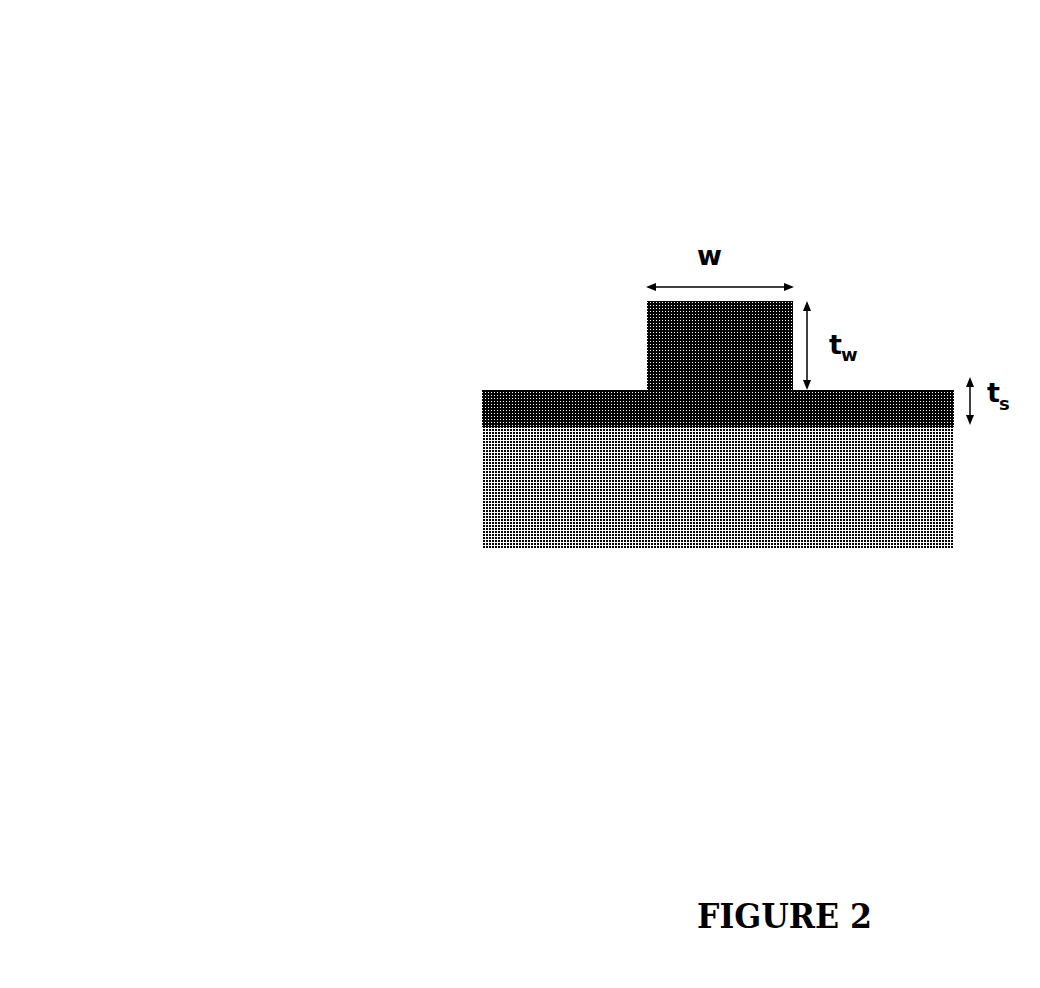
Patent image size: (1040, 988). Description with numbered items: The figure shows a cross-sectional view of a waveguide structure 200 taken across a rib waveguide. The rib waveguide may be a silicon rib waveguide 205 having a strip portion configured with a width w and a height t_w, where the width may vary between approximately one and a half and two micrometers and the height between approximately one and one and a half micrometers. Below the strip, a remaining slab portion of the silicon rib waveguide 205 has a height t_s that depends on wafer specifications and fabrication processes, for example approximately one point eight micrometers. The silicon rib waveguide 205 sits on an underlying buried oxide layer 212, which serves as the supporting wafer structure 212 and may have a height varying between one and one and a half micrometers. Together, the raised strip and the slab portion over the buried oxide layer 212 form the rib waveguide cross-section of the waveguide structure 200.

The waveguide structure 200 is at (502, 328).
The silicon rib waveguide 205 is at (803, 295).
The buried oxide (BOX) layer 212 is at (486, 554).